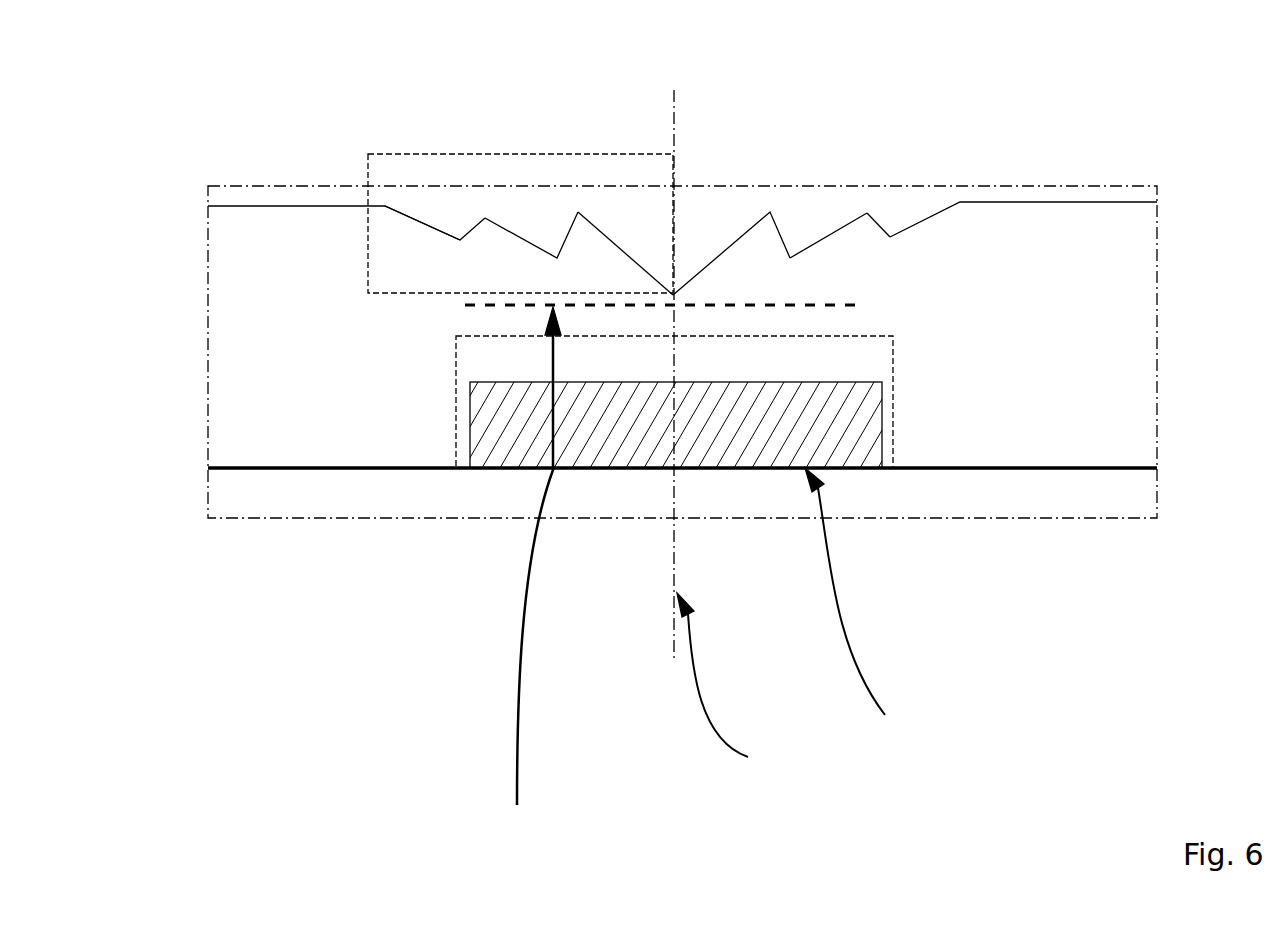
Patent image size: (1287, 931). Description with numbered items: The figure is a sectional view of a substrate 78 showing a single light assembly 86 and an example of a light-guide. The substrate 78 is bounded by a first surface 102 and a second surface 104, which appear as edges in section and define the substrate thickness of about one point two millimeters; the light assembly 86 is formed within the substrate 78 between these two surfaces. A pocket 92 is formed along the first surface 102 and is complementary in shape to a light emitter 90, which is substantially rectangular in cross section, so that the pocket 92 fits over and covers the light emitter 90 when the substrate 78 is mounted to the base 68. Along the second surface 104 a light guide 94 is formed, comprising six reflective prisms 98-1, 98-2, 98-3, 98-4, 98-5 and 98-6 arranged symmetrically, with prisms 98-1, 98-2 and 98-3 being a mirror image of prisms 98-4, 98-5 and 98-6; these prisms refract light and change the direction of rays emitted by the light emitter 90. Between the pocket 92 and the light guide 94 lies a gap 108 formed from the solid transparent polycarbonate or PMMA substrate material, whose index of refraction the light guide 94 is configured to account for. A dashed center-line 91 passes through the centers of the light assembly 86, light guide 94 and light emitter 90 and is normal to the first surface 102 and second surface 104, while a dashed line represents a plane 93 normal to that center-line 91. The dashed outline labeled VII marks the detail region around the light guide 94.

The light assembly 86 is at (226, 608).
The substrate 78 is at (1147, 443).
The first surface 102 is at (328, 468).
The second surface 104 is at (1020, 202).
The reflective prism 98-1 is at (620, 233).
The reflective prism 98-2 is at (533, 235).
The reflective prism 98-3 is at (443, 218).
The reflective prism 98-4 is at (720, 237).
The reflective prism 98-5 is at (805, 235).
The reflective prism 98-6 is at (905, 218).
The light guide 94 is at (683, 200).
The detail region VII is at (382, 150).
The gap 108 is at (900, 310).
The pocket 92 is at (893, 352).
The light emitter 90 is at (655, 445).
The plane 93 is at (527, 578).
The center-line 91 is at (732, 682).
The base 68 is at (865, 598).